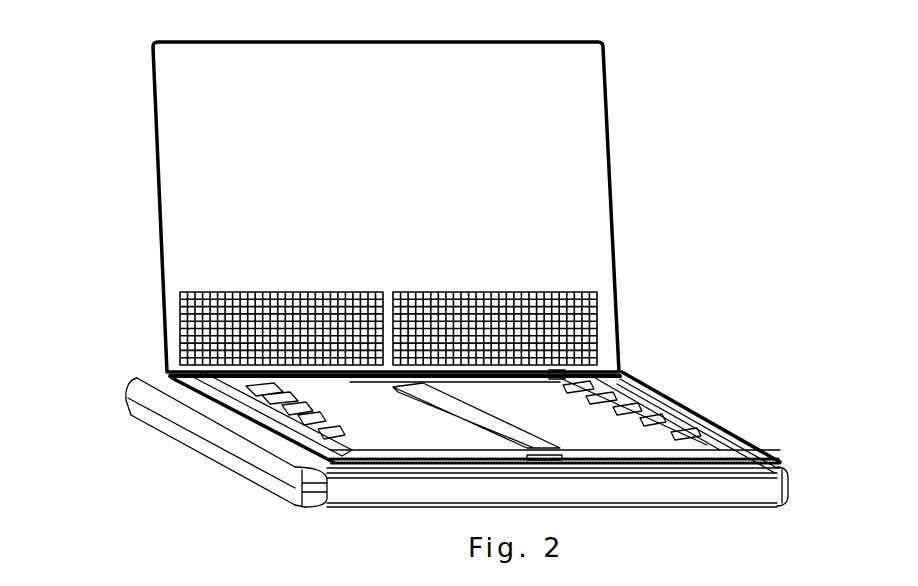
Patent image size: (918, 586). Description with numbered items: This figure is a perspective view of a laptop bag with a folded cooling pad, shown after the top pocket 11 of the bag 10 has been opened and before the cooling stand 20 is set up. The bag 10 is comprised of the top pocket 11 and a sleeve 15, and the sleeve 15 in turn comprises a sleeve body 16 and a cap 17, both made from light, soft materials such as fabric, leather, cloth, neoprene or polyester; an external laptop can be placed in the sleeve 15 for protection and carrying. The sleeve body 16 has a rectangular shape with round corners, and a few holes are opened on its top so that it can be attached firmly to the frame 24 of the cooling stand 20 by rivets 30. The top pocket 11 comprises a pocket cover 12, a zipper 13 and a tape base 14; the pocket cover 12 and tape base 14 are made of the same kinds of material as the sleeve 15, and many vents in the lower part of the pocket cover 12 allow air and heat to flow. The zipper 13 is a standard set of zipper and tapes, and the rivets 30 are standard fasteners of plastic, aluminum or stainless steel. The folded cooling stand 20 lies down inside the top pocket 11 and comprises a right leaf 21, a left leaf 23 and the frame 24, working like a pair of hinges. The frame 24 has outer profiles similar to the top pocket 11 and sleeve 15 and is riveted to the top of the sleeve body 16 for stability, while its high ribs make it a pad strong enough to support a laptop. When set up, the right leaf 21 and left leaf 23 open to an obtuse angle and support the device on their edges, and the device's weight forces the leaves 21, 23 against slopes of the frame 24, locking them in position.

The bag 10 is at (715, 480).
The top pocket 11 is at (489, 285).
The pocket cover 12 is at (616, 230).
The zipper 13 is at (559, 372).
The tape base 14 is at (640, 368).
The sleeve 15 is at (588, 505).
The sleeve body 16 is at (420, 480).
The cap 17 is at (245, 480).
The cooling stand 20 is at (327, 392).
The right leaf 21 is at (658, 447).
The left leaf 23 is at (267, 410).
The frame 24 is at (664, 440).
The rivets 30 is at (711, 447).